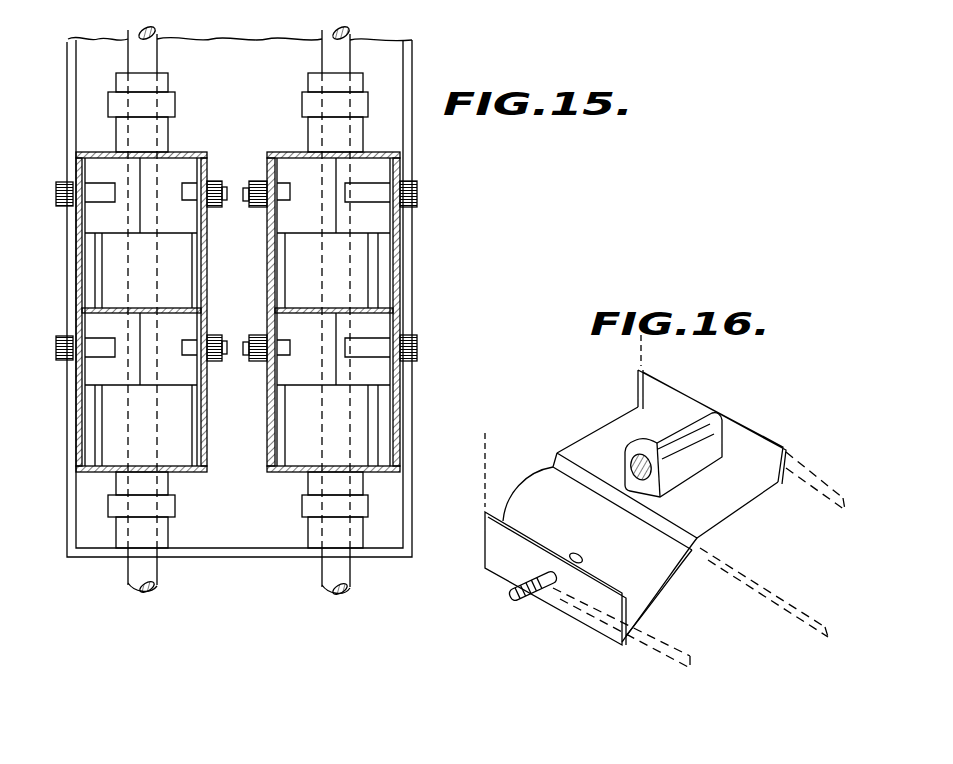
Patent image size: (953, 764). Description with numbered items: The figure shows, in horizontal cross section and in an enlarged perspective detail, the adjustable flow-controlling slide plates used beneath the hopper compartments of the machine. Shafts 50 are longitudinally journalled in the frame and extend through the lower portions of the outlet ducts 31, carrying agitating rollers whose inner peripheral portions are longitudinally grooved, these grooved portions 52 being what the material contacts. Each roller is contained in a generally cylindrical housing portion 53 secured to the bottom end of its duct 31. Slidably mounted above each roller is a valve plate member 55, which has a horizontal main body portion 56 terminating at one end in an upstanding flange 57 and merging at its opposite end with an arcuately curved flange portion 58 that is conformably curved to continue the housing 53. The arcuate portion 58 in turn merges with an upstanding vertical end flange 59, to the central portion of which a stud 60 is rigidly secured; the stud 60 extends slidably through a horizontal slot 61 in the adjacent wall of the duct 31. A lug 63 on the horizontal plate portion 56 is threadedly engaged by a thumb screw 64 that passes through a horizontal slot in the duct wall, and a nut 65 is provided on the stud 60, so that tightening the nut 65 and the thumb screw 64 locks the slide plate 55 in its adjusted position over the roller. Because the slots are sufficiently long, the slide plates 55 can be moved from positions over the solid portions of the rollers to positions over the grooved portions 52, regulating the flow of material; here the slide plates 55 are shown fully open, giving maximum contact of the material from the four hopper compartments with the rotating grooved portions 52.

In FIG. 15, the outlet duct 31 is at (208, 276).
In FIG. 15, the shaft 50 is at (130, 583).
In FIG. 15, the longitudinally grooved inner peripheral portion 52 is at (358, 273).
In FIG. 15, the cylindrical housing portion 53 is at (118, 238).
In FIG. 16, the valve plate member 55 is at (665, 469).
In FIG. 16, the horizontal main body portion 56 is at (725, 506).
In FIG. 16, the upstanding flange 57 is at (750, 445).
In FIG. 16, the arcuately curved flange portion 58 is at (650, 590).
In FIG. 16, the upstanding vertical end flange 59 is at (608, 582).
In FIG. 15, the stud 60 is at (184, 184).
In FIG. 16, the stud 60 is at (523, 603).
In FIG. 16, the horizontal slot 61 is at (662, 657).
In FIG. 15, the lug 63 is at (100, 198).
In FIG. 16, the lug 63 is at (680, 427).
In FIG. 15, the thumb screw 64 is at (58, 182).
In FIG. 15, the nut 65 is at (214, 180).